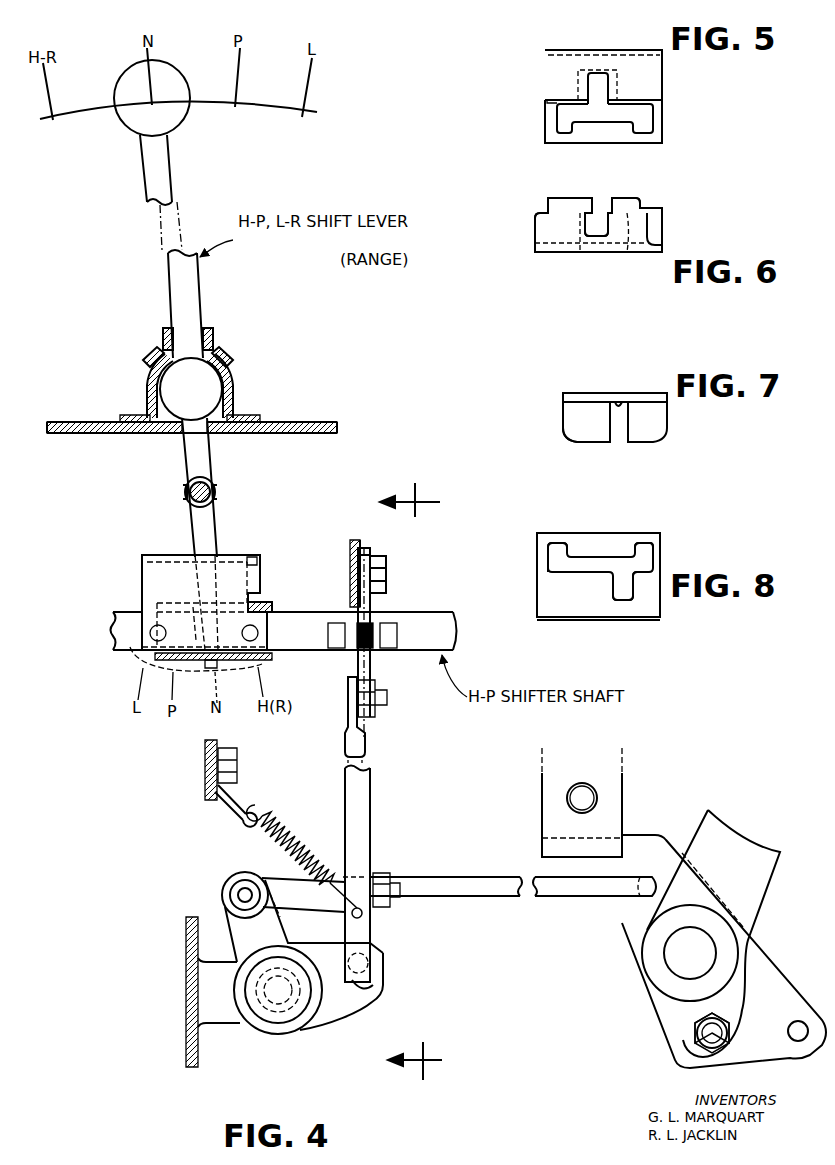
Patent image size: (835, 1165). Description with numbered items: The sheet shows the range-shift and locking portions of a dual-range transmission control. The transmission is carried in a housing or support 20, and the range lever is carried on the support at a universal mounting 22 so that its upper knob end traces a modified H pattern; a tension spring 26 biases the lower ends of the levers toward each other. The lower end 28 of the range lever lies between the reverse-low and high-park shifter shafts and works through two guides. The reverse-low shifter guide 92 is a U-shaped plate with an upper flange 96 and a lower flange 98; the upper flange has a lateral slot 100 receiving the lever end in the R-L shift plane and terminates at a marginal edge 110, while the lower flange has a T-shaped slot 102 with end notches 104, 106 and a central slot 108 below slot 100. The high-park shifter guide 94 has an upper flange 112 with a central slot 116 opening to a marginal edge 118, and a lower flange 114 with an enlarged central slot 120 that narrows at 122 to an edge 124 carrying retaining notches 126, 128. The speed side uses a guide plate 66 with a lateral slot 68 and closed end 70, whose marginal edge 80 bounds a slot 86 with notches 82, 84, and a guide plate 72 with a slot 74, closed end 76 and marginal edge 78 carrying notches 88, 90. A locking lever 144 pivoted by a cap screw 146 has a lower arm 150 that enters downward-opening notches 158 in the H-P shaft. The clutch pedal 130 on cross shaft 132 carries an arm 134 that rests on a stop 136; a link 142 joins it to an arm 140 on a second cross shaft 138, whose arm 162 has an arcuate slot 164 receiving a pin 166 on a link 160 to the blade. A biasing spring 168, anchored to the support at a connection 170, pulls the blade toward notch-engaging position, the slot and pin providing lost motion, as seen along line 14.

In FIG. 4, the line 14- 14 is at (413, 782).
In FIG. 4, the transmission housing or support 20 is at (315, 422).
In FIG. 4, the universal mounting of range lever 22 is at (213, 380).
In FIG. 4, the tension spring 26 is at (213, 490).
In FIG. 4, the lower end of range lever 28 is at (210, 667).
In FIG. 8, the guide plate 66 is at (570, 620).
In FIG. 8, the lateral slot 68 is at (622, 598).
In FIG. 8, the closed end of slot 70 is at (630, 597).
In FIG. 7, the guide plate 72 is at (573, 393).
In FIG. 7, the slot 74 is at (618, 432).
In FIG. 7, the closed end of slot 76 is at (618, 403).
In FIG. 7, the longitudinal marginal edge 78 is at (590, 442).
In FIG. 8, the longitudinal marginal edge portion 80 is at (537, 587).
In FIG. 8, the notch 82 is at (558, 543).
In FIG. 8, the notch 84 is at (645, 543).
In FIG. 8, the slot 86 is at (600, 557).
In FIG. 7, the notch 88 is at (572, 432).
In FIG. 7, the notch 90 is at (657, 432).
In FIG. 4, the reverse-low shifter guide 92 is at (272, 607).
In FIG. 5, the reverse-low shifter guide 92 is at (557, 48).
In FIG. 4, the high-park shifter guide 94 is at (142, 578).
In FIG. 6, the high-park shifter guide 94 is at (547, 253).
In FIG. 4, the upper flange 96 is at (262, 602).
In FIG. 5, the upper flange 96 is at (657, 82).
In FIG. 4, the lower flange 98 is at (273, 657).
In FIG. 5, the lower flange 98 is at (663, 137).
In FIG. 4, the lateral slot 100 is at (193, 607).
In FIG. 5, the lateral slot 100 is at (597, 73).
In FIG. 5, the T-shaped slot 102 is at (602, 110).
In FIG. 5, the end notch 104 is at (567, 127).
In FIG. 5, the end notch 106 is at (643, 125).
In FIG. 5, the central slot 108 is at (578, 73).
In FIG. 5, the longitudinal marginal edge 110 is at (550, 103).
In FIG. 4, the upper flange 112 is at (147, 557).
In FIG. 6, the upper flange 112 is at (538, 232).
In FIG. 4, the lower flange 114 is at (133, 650).
In FIG. 6, the lower flange 114 is at (662, 237).
In FIG. 4, the central slot 116 is at (228, 557).
In FIG. 6, the central slot 116 is at (598, 237).
In FIG. 6, the fore and aft marginal edge 118 is at (535, 218).
In FIG. 6, the enlarged central slot 120 is at (613, 250).
In FIG. 6, the narrowed lateral opening 122 is at (603, 207).
In FIG. 6, the longitudinal marginal edge portion 124 is at (637, 197).
In FIG. 6, the notch 126 is at (643, 207).
In FIG. 6, the notch 128 is at (550, 200).
In FIG. 4, the clutch pedal 130 is at (730, 842).
In FIG. 4, the cross shaft 132 is at (675, 957).
In FIG. 4, the arm 134 is at (762, 963).
In FIG. 4, the stop 136 is at (622, 798).
In FIG. 4, the second cross shaft 138 is at (278, 1000).
In FIG. 4, the arm 140 is at (277, 930).
In FIG. 4, the link 142 is at (463, 885).
In FIG. 4, the locking lever 144 is at (362, 543).
In FIG. 4, the pivot cap screw 146 is at (385, 563).
In FIG. 4, the lower arm 150 is at (370, 660).
In FIG. 4, the notches 158 is at (372, 625).
In FIG. 4, the link 160 is at (367, 795).
In FIG. 4, the arm 162 is at (370, 1003).
In FIG. 4, the arcuate slot 164 is at (377, 987).
In FIG. 4, the pin 166 is at (370, 953).
In FIG. 4, the biasing spring 168 is at (300, 837).
In FIG. 4, the connection 170 is at (233, 792).